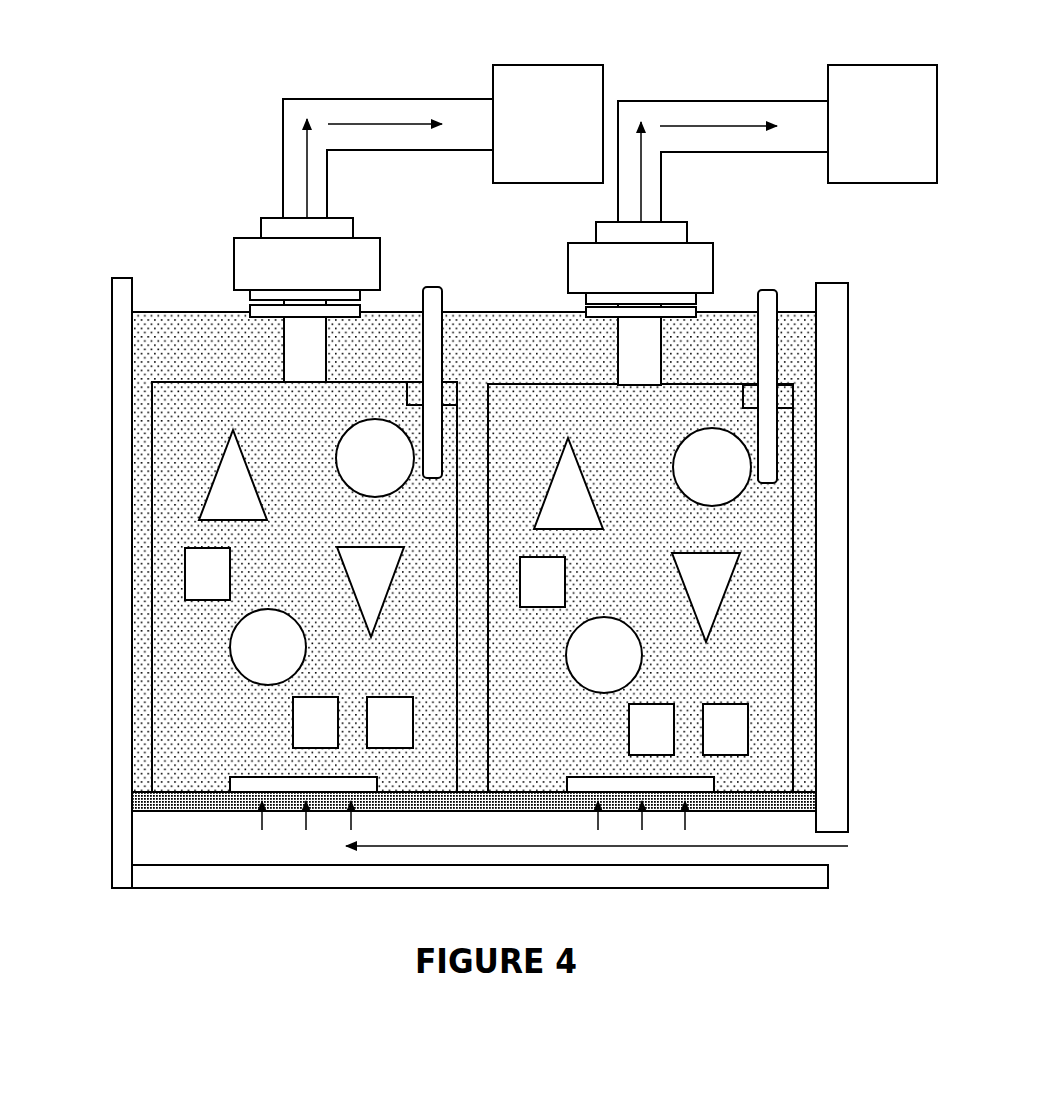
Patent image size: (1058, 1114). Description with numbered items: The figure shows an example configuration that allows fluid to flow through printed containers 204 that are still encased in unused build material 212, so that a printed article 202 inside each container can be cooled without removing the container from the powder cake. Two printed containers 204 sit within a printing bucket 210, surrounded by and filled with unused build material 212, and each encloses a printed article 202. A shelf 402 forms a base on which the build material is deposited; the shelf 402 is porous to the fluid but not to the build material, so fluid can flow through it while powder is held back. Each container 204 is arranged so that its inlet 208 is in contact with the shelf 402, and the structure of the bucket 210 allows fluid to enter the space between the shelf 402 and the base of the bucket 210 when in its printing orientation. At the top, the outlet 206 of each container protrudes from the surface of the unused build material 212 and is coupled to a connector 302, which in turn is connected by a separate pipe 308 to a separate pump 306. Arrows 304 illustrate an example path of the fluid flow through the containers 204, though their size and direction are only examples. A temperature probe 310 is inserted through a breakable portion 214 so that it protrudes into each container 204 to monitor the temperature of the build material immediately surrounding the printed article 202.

The printed article 202 is at (229, 647).
The printed container 204 is at (151, 422).
The outlet 206 is at (298, 320).
The inlet 208 is at (283, 794).
The printing bucket 210 is at (660, 891).
The unused build material 212 is at (142, 349).
The breakable portion 214 is at (433, 377).
The connector 302 is at (232, 262).
The arrows 304 is at (302, 174).
The pump 306 is at (879, 63).
The pipe 308 is at (388, 96).
The temperature probe 310 is at (431, 285).
The shelf 402 is at (208, 814).